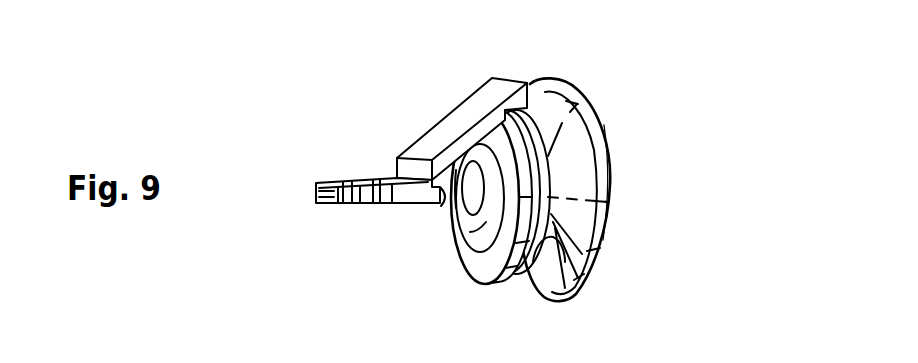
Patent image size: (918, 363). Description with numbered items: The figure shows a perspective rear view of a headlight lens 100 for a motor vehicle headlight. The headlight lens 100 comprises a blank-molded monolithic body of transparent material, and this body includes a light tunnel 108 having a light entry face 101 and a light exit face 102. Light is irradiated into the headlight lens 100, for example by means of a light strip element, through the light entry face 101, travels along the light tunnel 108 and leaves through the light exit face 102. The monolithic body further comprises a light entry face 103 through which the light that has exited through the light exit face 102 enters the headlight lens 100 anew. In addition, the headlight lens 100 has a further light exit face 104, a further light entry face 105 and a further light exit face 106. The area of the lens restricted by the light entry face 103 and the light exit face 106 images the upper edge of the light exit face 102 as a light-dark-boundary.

The headlight lens 100 is at (428, 296).
The light entry face 101 is at (316, 193).
The light exit face 102 is at (443, 196).
The light entry face 103 is at (463, 262).
The further light exit face 104 is at (550, 245).
The further light entry face 105 is at (550, 107).
The further light exit face 106 is at (612, 178).
The light tunnel 108 is at (362, 188).